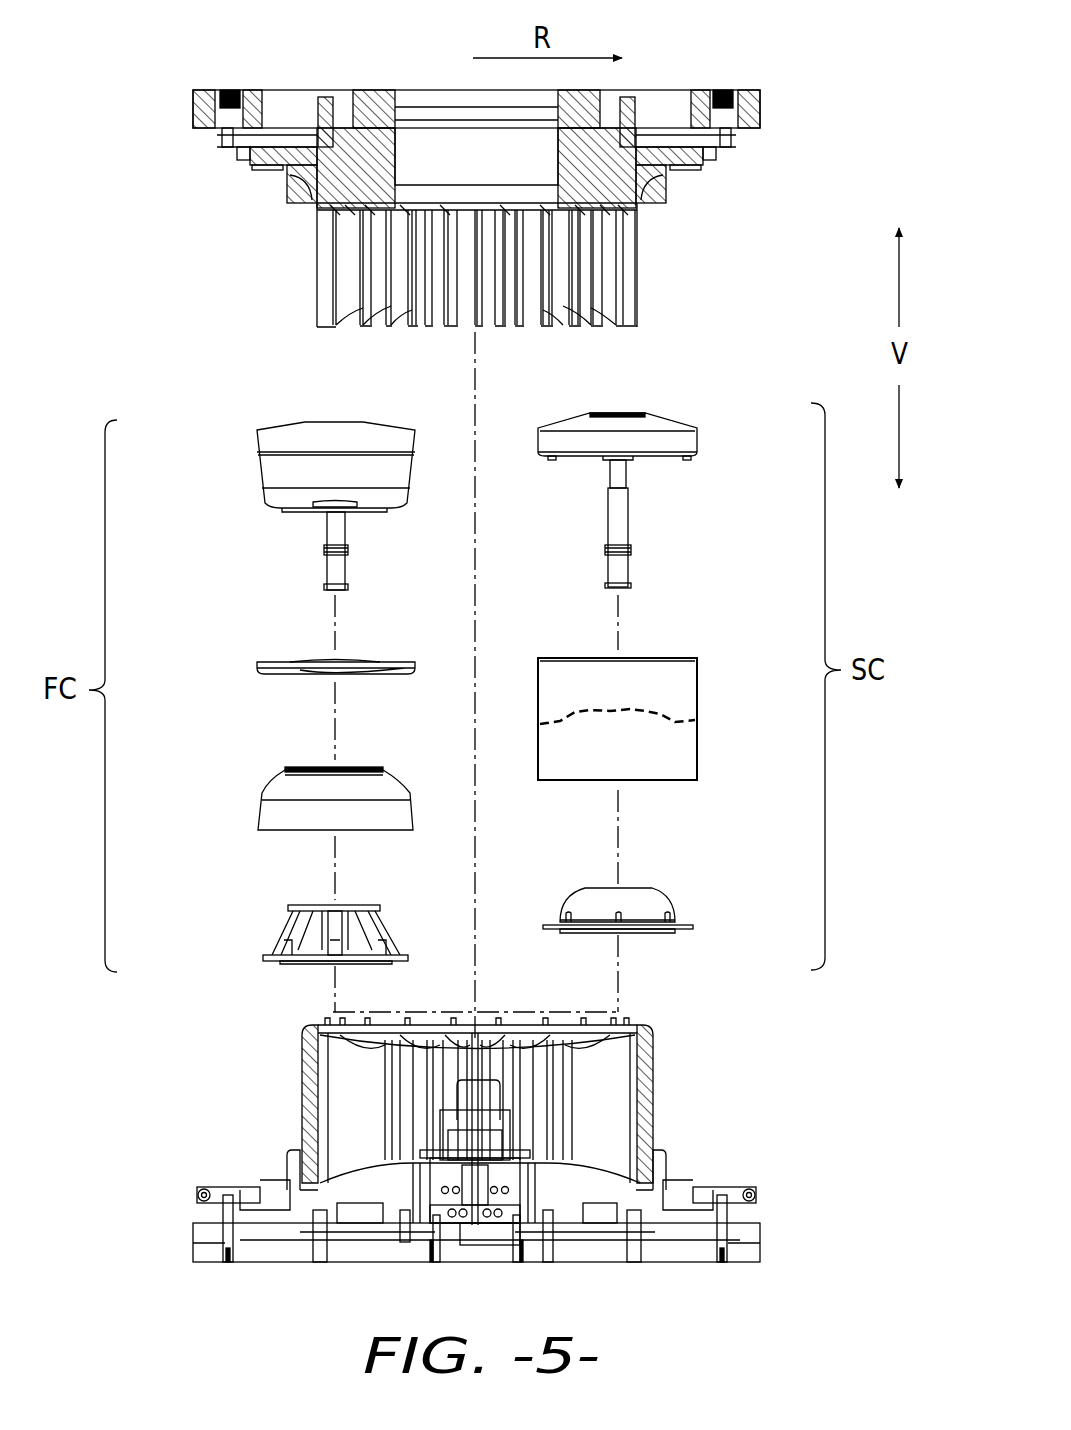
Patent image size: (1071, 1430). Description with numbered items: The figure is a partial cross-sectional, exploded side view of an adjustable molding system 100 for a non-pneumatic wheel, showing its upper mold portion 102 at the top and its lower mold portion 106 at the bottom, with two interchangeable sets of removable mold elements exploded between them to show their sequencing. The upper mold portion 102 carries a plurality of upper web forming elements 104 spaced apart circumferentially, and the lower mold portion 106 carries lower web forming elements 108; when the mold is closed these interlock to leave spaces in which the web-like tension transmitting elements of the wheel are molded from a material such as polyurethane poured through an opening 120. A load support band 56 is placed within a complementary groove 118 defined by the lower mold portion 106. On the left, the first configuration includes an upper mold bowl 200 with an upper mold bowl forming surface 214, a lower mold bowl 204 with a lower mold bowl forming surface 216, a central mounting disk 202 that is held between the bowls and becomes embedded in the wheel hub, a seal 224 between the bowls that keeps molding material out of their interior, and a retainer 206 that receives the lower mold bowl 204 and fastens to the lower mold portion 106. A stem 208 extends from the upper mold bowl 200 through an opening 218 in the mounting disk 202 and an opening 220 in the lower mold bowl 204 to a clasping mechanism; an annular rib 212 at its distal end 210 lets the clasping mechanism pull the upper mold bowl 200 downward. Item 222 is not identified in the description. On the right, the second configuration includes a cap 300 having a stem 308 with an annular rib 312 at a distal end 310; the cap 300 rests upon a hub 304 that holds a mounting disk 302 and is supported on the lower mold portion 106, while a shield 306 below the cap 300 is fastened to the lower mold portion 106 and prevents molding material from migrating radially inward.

The adjustable molding system 100 is at (801, 78).
The upper mold portion 102 is at (170, 97).
The upper web forming elements 104 is at (325, 305).
The lower mold portion 106 is at (168, 1240).
The lower web forming elements 108 is at (326, 1113).
The groove 118 is at (293, 1192).
The opening 120 is at (443, 94).
The load support band 56 is at (309, 1025).
The upper mold bowl 200 is at (267, 440).
The central mounting disk 202 is at (270, 665).
The lower mold bowl 204 is at (270, 813).
The retainer 206 is at (273, 950).
The stem 208 is at (333, 525).
The distal end 210 is at (312, 590).
The annular rib 212 is at (347, 588).
The upper mold bowl forming surface 214 is at (256, 469).
The lower mold bowl forming surface 216 is at (262, 779).
The opening 218 is at (311, 645).
The opening 220 is at (312, 758).
The spider top flange 222 is at (354, 896).
The seal 224 is at (389, 764).
The cap 300 is at (690, 442).
The mounting disk 302 is at (680, 720).
The hub 304 is at (697, 747).
The shield 306 is at (638, 900).
The stem 308 is at (620, 513).
The distal end 310 is at (648, 585).
The annular rib 312 is at (603, 590).